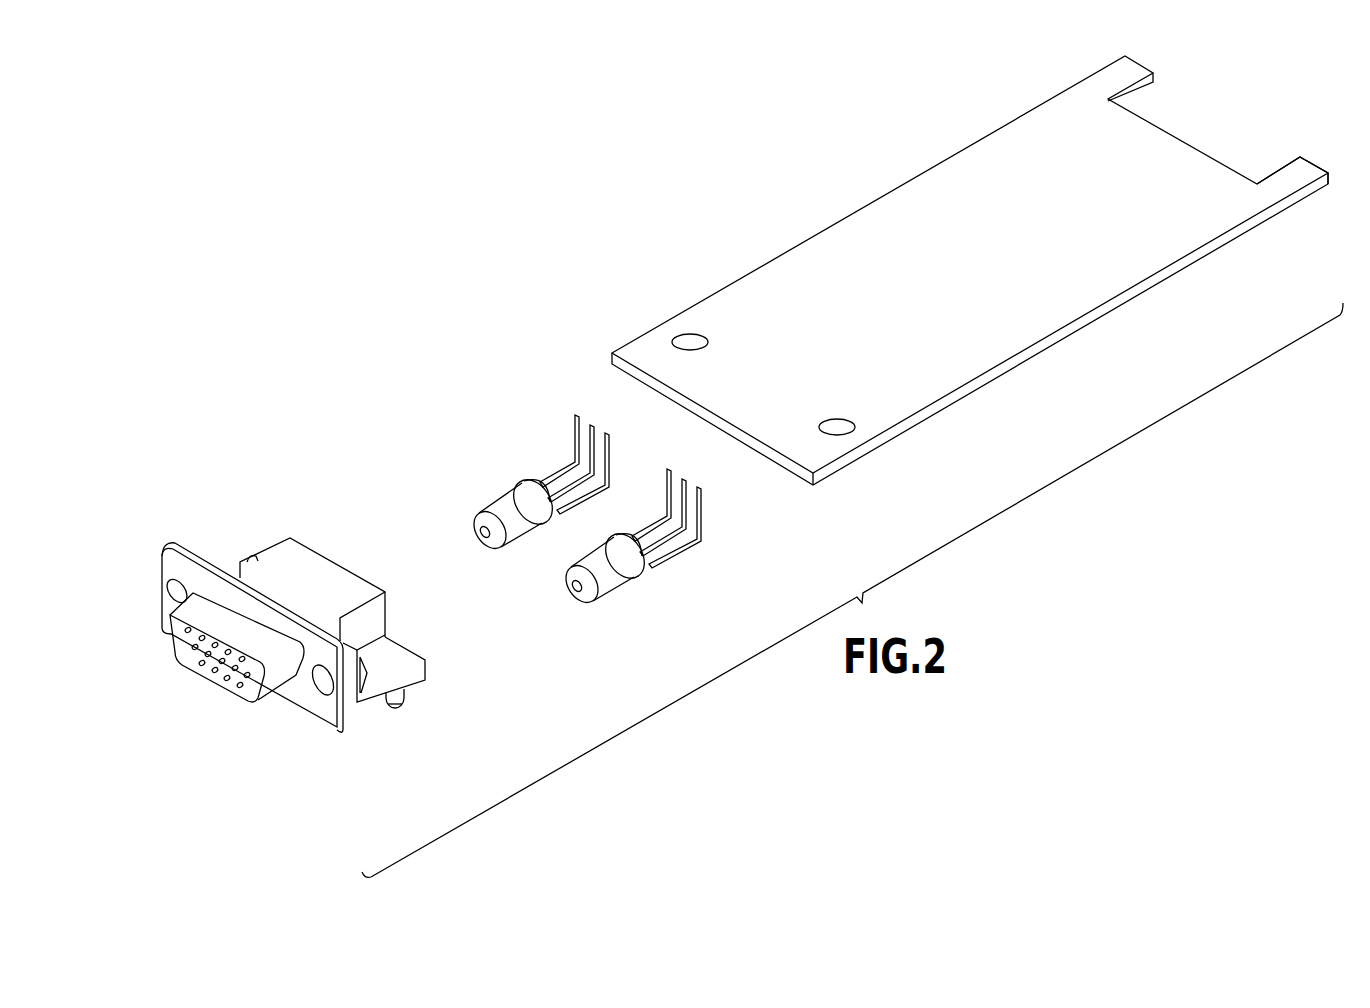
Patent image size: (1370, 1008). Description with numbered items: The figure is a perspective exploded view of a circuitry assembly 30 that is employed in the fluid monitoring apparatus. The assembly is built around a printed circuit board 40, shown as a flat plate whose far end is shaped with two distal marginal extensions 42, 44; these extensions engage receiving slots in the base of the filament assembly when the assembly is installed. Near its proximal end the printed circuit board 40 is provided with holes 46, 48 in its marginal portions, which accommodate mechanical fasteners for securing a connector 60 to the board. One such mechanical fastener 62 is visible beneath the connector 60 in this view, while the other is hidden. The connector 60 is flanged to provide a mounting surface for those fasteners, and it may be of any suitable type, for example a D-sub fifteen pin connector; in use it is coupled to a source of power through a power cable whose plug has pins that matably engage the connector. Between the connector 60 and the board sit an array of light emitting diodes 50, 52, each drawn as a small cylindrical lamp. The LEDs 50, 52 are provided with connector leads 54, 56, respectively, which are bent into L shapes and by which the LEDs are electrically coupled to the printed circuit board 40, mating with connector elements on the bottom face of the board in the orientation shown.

The circuitry assembly 30 is at (561, 265).
The printed circuit board 40 is at (980, 259).
The distal marginal extension 42 is at (1115, 75).
The distal marginal extension 44 is at (1290, 176).
The hole 46 is at (688, 340).
The hole 48 is at (845, 428).
The light emitting diode 50 is at (615, 582).
The light emitting diode 52 is at (502, 507).
The connector leads 54 is at (707, 517).
The connector leads 56 is at (567, 442).
The connector 60 is at (211, 672).
The mechanical fastener 62 is at (392, 709).